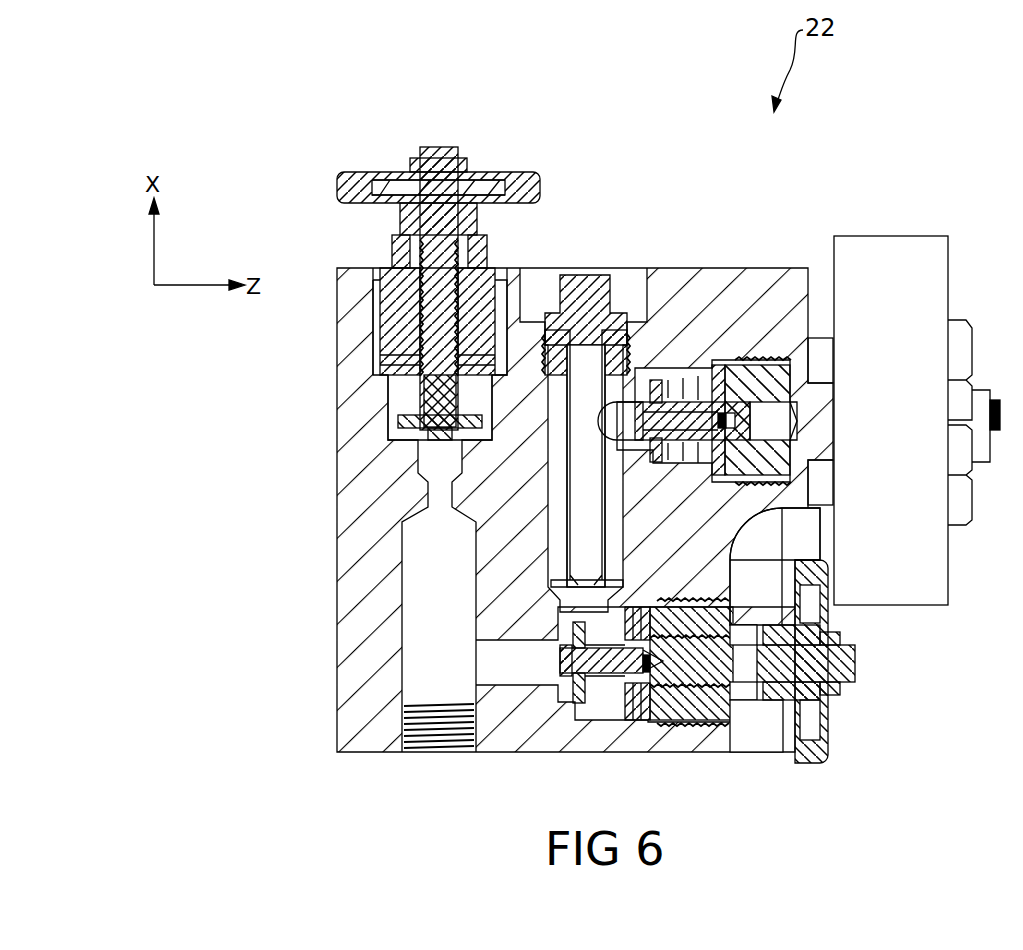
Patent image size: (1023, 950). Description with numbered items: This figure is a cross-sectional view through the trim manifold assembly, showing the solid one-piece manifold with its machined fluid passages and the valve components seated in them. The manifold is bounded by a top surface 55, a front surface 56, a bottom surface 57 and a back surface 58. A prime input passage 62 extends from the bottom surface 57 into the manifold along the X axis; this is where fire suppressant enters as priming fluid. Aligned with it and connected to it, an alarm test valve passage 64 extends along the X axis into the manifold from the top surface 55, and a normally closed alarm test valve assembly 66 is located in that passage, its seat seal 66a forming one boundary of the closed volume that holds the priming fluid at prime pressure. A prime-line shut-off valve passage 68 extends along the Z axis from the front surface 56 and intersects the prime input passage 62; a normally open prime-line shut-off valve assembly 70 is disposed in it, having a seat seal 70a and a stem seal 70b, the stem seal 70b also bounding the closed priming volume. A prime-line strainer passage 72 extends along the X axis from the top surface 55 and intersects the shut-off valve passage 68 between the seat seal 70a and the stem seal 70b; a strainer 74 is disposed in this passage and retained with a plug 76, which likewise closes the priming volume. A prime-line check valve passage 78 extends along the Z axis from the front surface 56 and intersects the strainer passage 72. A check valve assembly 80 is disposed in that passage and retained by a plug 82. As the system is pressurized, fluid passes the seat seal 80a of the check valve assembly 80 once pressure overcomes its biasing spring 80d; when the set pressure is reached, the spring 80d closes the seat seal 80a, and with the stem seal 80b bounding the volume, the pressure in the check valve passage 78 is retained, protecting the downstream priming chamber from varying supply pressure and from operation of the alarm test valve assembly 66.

The top surface 55 is at (350, 268).
The front surface 56 is at (880, 236).
The bottom surface 57 is at (722, 752).
The back surface 58 is at (340, 550).
The prime input passage 62 is at (412, 648).
The alarm test valve passage 64 is at (402, 403).
The alarm test valve assembly 66 is at (447, 142).
The seat seal 66a is at (402, 438).
The prime-line shut-off valve passage 68 is at (528, 670).
The prime-line shut-off valve assembly 70 is at (860, 683).
The seat seal 70a is at (578, 706).
The stem seal 70b is at (640, 720).
The prime-line strainer passage 72 is at (553, 322).
The strainer 74 is at (555, 388).
The plug 76 is at (592, 284).
The prime-line check valve passage 78 is at (725, 360).
The check valve assembly 80 is at (770, 350).
The seat seal 80a is at (654, 380).
The stem seal 80b is at (720, 365).
The biasing spring 80d is at (703, 442).
The plug 82 is at (810, 312).